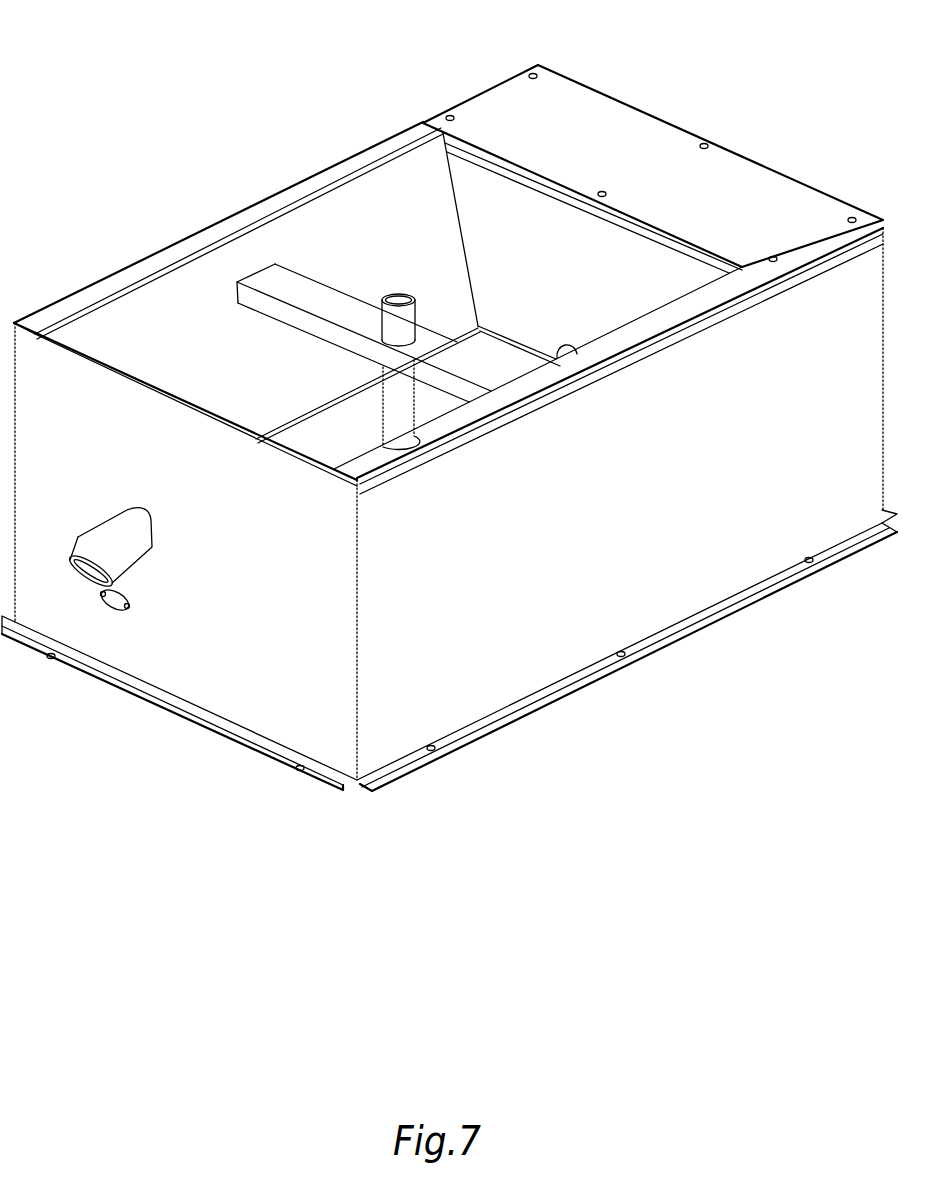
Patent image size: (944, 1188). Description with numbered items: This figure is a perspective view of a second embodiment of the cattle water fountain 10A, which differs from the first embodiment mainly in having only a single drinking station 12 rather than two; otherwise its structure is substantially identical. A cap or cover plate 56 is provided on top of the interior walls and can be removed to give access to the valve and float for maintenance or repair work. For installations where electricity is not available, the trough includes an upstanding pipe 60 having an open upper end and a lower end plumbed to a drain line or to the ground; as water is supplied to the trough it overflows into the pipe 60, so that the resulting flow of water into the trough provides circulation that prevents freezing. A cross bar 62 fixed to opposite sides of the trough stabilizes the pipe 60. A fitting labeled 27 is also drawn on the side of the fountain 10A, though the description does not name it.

The fountain 10A is at (700, 55).
The drinking station 12 is at (343, 203).
The cover plate 56 is at (738, 172).
The pipe 60 is at (414, 313).
The cross bar 62 is at (293, 287).
The elbow fitting / inlet 27 is at (105, 530).